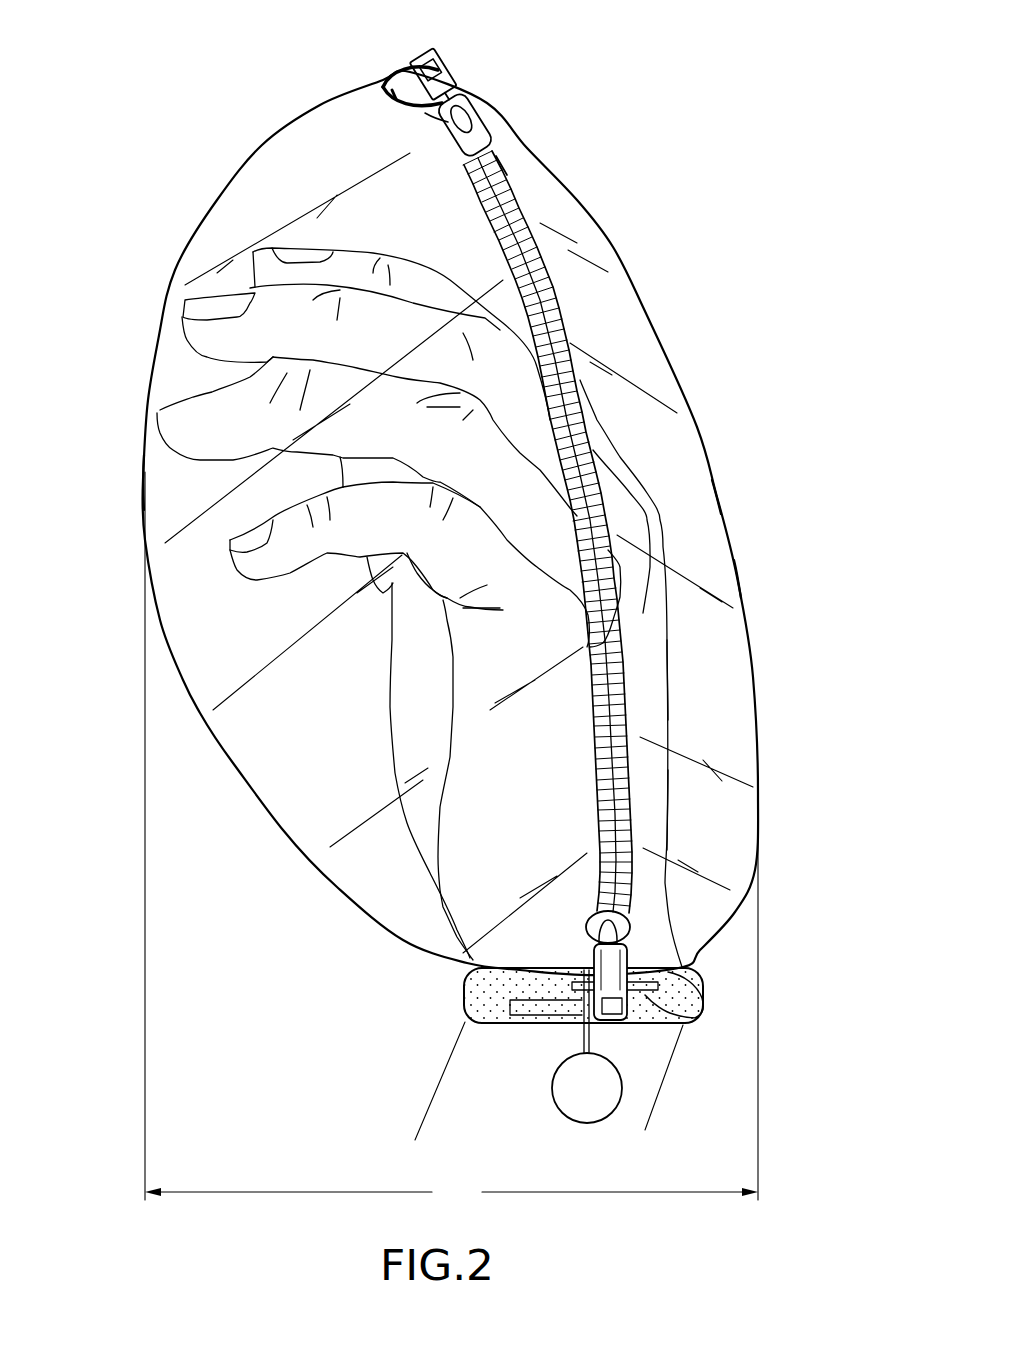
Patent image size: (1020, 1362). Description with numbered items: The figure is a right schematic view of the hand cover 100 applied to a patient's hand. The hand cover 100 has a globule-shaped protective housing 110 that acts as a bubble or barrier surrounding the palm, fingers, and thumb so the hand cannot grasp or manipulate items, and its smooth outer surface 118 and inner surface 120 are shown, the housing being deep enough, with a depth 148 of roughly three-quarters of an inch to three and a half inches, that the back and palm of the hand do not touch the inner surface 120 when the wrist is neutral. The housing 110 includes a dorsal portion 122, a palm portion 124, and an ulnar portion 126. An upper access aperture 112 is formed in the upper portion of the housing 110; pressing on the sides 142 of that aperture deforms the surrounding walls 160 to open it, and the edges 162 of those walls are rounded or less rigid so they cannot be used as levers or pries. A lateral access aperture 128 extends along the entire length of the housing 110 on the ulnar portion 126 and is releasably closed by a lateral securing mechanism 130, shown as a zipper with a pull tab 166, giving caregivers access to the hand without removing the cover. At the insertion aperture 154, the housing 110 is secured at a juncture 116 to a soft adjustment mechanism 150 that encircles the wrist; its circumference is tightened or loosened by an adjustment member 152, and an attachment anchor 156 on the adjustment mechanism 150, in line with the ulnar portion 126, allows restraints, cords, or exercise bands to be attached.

The hand cover 100 is at (612, 70).
The protective housing 110 is at (697, 428).
The upper access aperture 112 is at (457, 88).
The juncture 116 is at (670, 972).
The outer surface 118 is at (697, 498).
The inner surface 120 is at (383, 87).
The dorsal portion 122 is at (727, 578).
The palm portion 124 is at (151, 474).
The ulnar portion 126 is at (647, 790).
The lateral access aperture 128 is at (630, 683).
The lateral securing mechanism 130 is at (547, 280).
The sides of the upper access aperture 142 is at (380, 108).
The depth 148 is at (451, 839).
The adjustment mechanism 150 is at (476, 997).
The adjustment member 152 is at (590, 1025).
The insertion aperture 154 is at (514, 1023).
The attachment anchor 156 is at (623, 1090).
The walls 160 is at (510, 148).
The edges 162 is at (407, 120).
The pull tab 166 is at (452, 76).